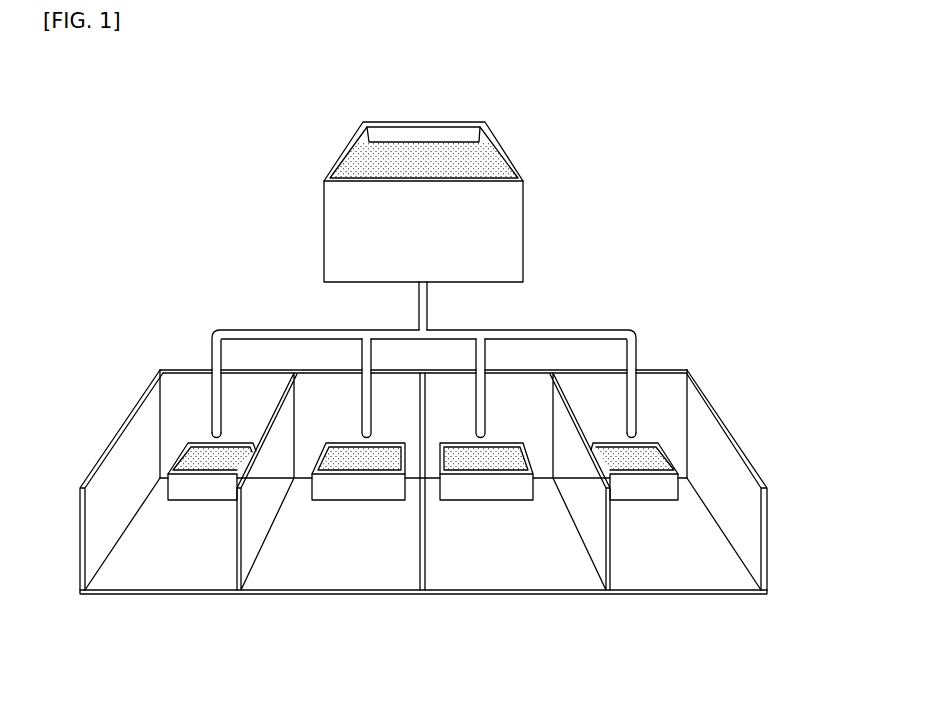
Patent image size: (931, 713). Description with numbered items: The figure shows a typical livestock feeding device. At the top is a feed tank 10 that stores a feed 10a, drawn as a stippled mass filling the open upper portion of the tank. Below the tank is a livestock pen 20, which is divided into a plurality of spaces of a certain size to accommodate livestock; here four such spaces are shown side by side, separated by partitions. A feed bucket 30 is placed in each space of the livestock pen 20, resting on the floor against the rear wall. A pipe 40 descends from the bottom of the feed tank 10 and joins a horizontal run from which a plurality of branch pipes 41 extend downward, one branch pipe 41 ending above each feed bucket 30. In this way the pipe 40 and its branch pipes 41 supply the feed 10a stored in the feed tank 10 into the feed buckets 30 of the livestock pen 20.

The feed tank 10 is at (515, 225).
The feed 10a is at (440, 147).
The pipe 40 is at (427, 300).
The branch pipes 41 is at (634, 357).
The livestock pen 20 is at (730, 433).
The feed bucket 30 is at (645, 460).